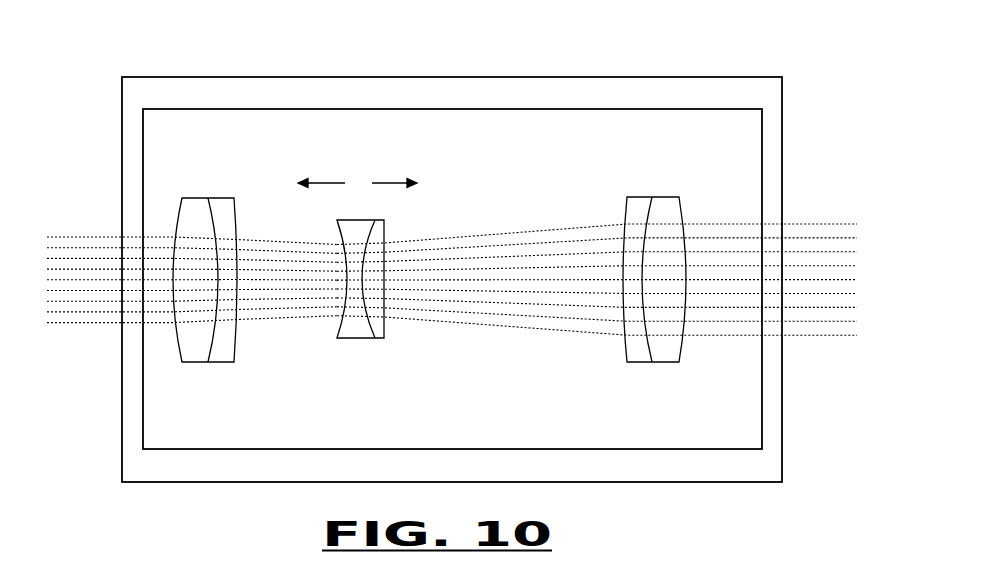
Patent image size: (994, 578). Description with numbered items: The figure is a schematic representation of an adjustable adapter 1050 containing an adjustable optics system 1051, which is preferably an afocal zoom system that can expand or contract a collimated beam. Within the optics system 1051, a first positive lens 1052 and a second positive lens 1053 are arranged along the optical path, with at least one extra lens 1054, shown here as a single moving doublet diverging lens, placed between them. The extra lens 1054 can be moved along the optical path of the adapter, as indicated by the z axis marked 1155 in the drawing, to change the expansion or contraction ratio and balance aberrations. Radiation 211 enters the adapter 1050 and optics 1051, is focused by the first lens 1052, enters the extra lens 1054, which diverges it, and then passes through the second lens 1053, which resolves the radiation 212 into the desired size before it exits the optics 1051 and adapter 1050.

The adjustable adapter 1050 is at (304, 77).
The adjustable optics system 1051 is at (237, 108).
The first positive lens 1052 is at (202, 345).
The second positive lens 1053 is at (667, 343).
The extra lens 1054 is at (353, 229).
The Z-axis adjustment direction 1155 is at (357, 168).
The radiation 211 is at (105, 293).
The outgoing light beam 212 is at (823, 237).